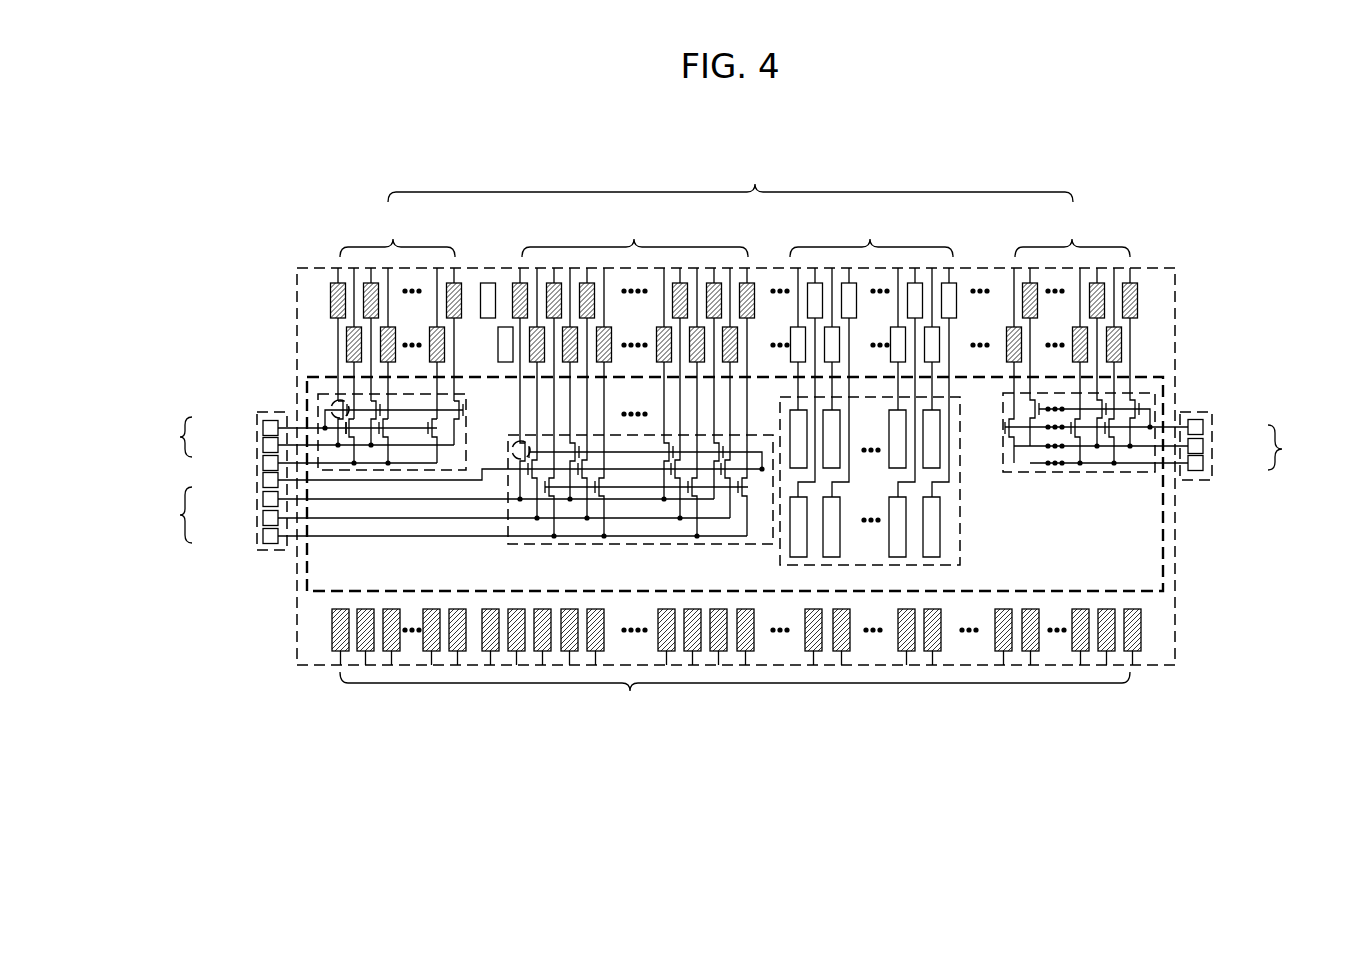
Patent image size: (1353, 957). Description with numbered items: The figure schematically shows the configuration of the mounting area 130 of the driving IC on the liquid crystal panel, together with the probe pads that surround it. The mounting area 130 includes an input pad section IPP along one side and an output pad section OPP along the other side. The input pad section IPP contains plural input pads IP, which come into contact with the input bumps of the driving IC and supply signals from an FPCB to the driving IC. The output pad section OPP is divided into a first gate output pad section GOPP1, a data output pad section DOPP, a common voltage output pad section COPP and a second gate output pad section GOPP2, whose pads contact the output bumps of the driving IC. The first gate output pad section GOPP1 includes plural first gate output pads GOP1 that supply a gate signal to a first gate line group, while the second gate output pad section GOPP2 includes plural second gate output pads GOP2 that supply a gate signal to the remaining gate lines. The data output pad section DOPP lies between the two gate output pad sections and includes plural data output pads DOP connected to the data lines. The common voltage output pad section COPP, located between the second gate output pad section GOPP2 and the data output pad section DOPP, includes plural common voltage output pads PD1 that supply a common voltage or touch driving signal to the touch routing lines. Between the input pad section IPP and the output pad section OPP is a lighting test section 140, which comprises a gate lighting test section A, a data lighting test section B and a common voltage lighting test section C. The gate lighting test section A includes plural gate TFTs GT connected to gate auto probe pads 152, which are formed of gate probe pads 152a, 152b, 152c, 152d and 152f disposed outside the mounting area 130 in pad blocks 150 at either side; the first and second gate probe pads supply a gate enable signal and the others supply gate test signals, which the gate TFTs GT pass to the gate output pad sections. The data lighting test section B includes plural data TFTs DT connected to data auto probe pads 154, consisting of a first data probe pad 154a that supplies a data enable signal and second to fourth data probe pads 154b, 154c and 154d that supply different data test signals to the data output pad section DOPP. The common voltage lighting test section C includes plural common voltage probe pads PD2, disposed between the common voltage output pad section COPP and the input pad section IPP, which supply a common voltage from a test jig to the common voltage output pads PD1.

The mounting area 130 is at (1176, 267).
The lighting test section 140 is at (1163, 377).
The flexible circuit pad block 150 is at (261, 412).
The gate auto probe pads 152 is at (734, 441).
The first gate probe pad 152a is at (262, 428).
The second gate probe pad 152b is at (1203, 427).
The third gate probe pad 152c is at (262, 445).
The fourth gate probe pad 152d is at (1203, 446).
The sixth gate probe pad 152f is at (1203, 463).
The data auto probe pads 154 is at (454, 510).
The first data probe pad 154a is at (262, 480).
The second data probe pad 154b is at (262, 499).
The third data probe pad 154c is at (262, 518).
The fourth data probe pad 154d is at (262, 536).
The first gate output pads GOP1 is at (330, 297).
The second gate output pads GOP2 is at (1138, 297).
The gate TFTs GT is at (332, 396).
The data TFTs DT is at (512, 440).
The data output pads DOP is at (748, 283).
The common voltage output pads PD1 is at (949, 283).
The common voltage probe pads PD2 is at (935, 505).
The input pads IP is at (331, 632).
The gate lighting test section A is at (333, 402).
The data lighting test section B is at (657, 545).
The common voltage lighting test section C is at (960, 543).
The output pad section OPP is at (730, 182).
The first gate output pad section GOPP1 is at (392, 343).
The second gate output pad section GOPP2 is at (1079, 344).
The data output pad section DOPP is at (640, 380).
The common voltage output pad section COPP is at (871, 235).
The input pad section IPP is at (735, 694).